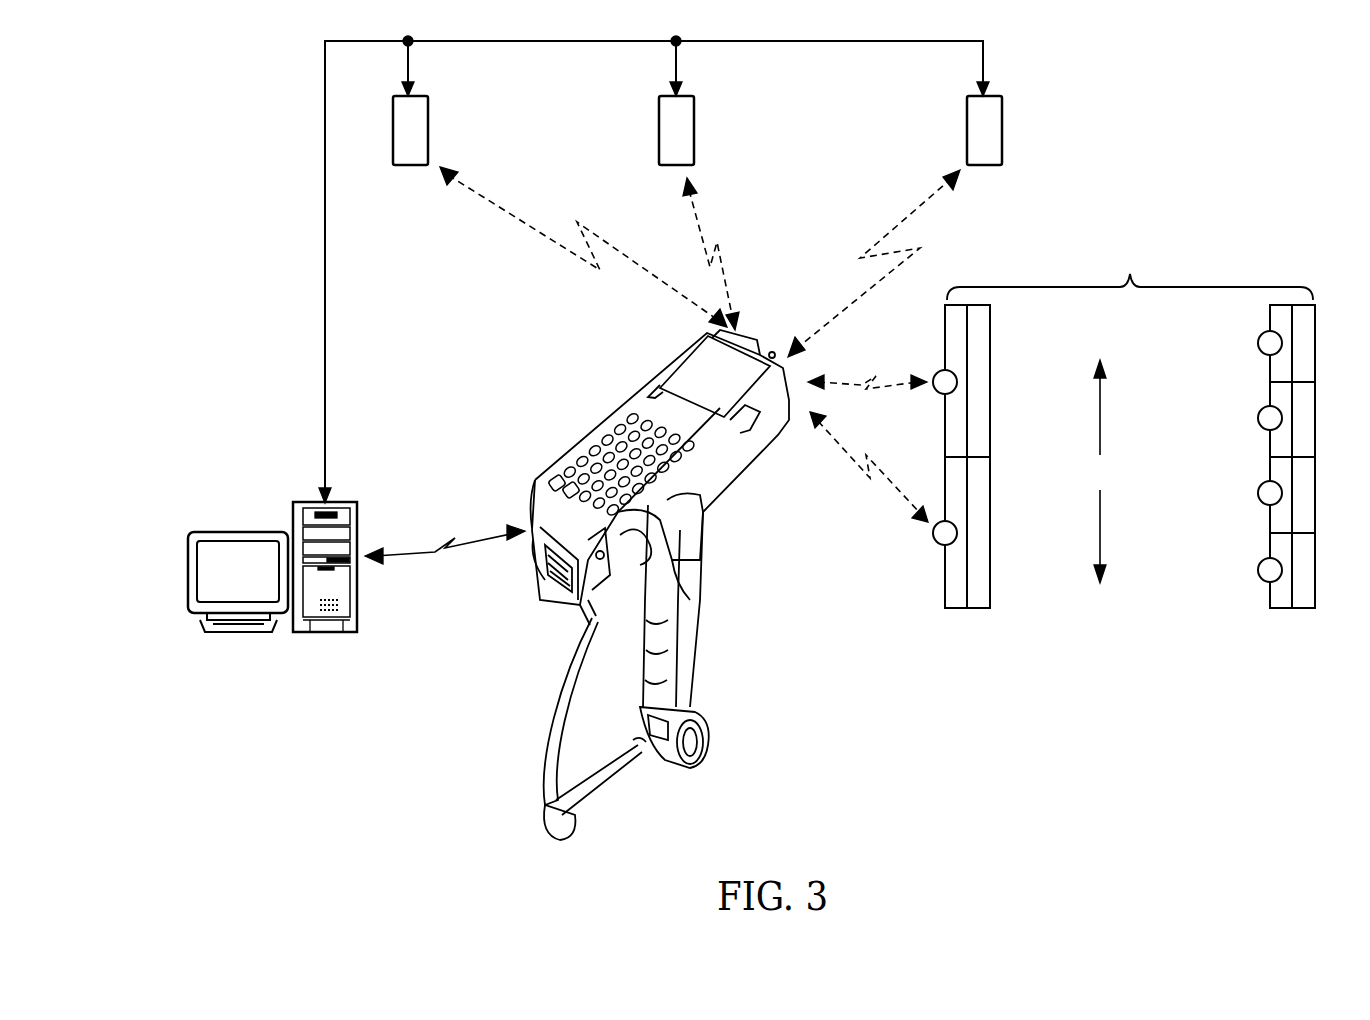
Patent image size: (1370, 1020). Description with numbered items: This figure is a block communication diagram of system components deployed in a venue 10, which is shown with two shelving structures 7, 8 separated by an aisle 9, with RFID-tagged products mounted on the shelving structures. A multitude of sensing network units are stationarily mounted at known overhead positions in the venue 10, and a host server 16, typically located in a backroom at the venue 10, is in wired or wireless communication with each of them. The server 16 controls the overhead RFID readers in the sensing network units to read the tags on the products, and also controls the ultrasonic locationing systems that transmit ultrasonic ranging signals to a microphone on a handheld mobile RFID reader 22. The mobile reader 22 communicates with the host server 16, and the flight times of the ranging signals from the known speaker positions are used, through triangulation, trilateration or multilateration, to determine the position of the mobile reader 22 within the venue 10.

The shelf 7 is at (977, 305).
The shelf 8 is at (1282, 305).
The aisle 9 is at (1158, 486).
The venue 10 is at (1202, 269).
The host server 16 is at (398, 669).
The mobile RFID reader 22 is at (735, 500).